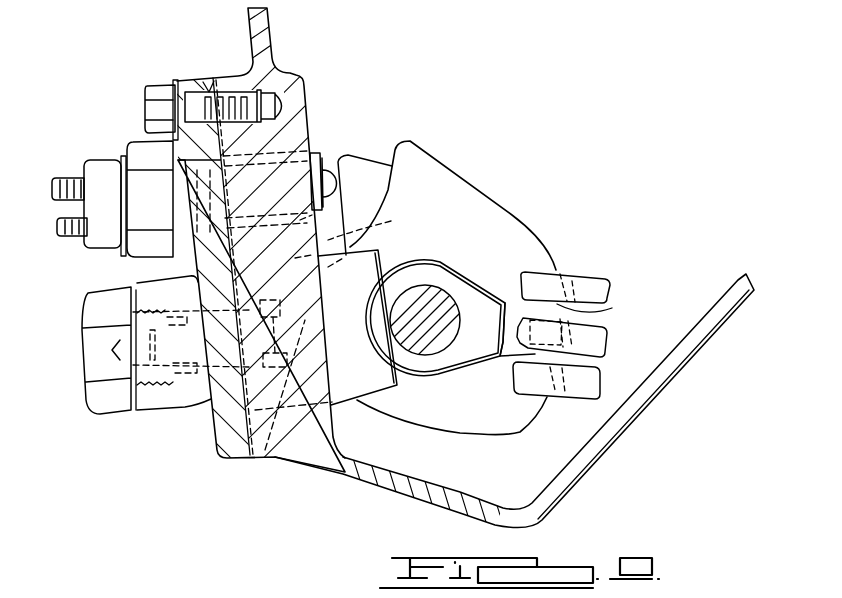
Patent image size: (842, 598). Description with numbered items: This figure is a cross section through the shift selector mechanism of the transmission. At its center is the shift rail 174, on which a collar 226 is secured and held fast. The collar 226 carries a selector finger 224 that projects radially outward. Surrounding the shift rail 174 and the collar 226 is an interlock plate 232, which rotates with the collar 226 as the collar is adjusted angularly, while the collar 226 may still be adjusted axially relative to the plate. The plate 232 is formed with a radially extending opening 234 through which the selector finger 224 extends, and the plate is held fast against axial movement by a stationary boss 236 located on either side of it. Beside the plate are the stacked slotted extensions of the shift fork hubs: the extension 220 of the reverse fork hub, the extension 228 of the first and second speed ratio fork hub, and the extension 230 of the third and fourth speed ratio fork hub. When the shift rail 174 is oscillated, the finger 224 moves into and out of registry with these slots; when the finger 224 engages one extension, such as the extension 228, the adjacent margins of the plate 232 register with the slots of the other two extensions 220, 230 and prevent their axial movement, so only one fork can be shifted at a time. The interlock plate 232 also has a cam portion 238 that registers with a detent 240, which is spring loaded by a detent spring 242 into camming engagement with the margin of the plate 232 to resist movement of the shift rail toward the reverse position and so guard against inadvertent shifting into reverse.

The shift rail 174 is at (440, 312).
The extension 220 is at (601, 283).
The selector finger 224 is at (507, 352).
The collar 226 is at (450, 360).
The extension 228 is at (597, 337).
The extension 230 is at (598, 396).
The interlock plate 232 is at (516, 228).
The radially extending opening 234 is at (583, 315).
The stationary boss 236 is at (343, 460).
The cam portion 238 is at (371, 236).
The detent 240 is at (262, 459).
The nut 242 is at (188, 385).